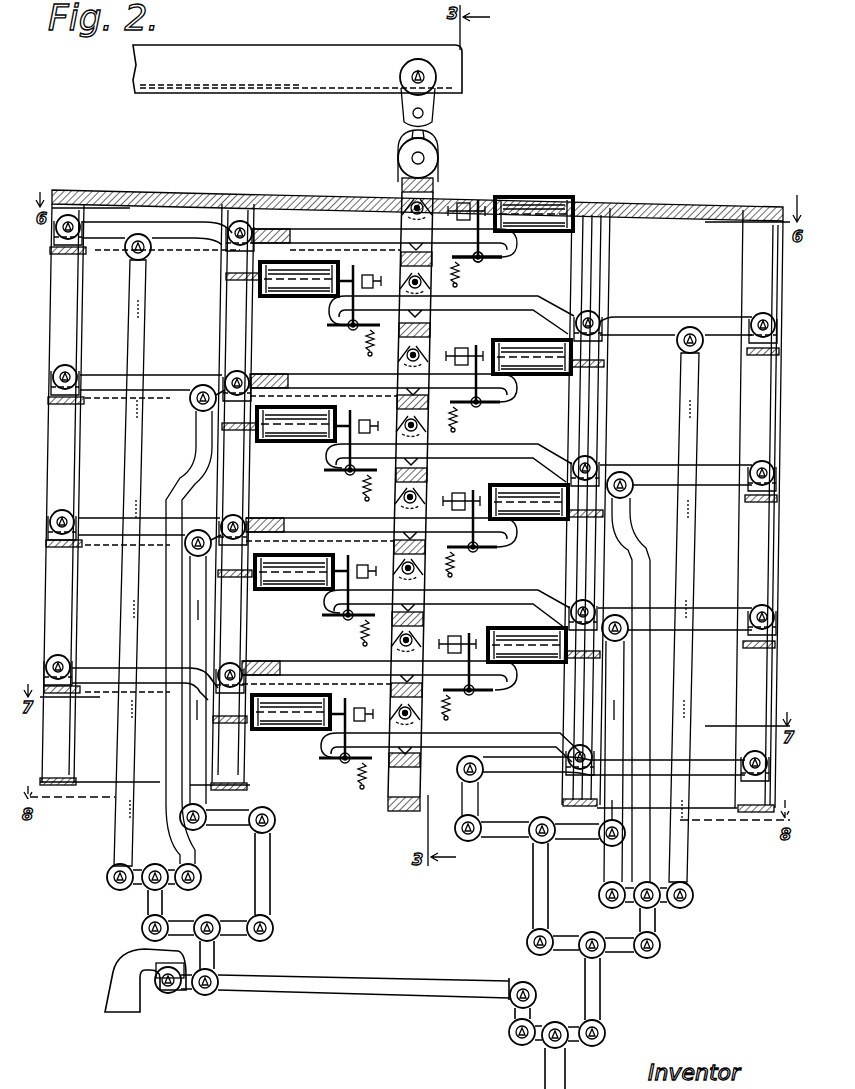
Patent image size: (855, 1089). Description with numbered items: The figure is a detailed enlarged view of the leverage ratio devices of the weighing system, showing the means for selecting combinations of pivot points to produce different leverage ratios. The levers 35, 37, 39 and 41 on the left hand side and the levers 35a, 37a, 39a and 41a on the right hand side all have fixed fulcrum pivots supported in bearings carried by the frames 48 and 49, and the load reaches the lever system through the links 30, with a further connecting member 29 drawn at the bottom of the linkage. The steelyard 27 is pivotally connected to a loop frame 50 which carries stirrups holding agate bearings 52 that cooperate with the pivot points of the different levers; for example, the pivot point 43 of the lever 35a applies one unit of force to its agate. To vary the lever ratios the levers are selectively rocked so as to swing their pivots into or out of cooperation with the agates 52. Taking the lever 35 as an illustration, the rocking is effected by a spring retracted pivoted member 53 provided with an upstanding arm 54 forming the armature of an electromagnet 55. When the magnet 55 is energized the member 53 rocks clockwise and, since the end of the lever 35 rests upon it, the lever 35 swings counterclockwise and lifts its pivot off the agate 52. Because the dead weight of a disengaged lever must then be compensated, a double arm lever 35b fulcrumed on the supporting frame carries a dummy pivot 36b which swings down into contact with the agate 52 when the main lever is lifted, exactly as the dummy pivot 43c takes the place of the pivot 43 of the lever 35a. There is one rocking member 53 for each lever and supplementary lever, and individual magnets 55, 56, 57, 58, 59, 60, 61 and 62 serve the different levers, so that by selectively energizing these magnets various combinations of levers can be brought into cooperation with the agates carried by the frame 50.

The steelyard 27 is at (432, 118).
The loop frame 50 is at (440, 181).
The upstanding arm 54 is at (482, 205).
The electromagnet 55 is at (540, 233).
The dummy pivot 36b is at (413, 250).
The double arm lever 35b is at (292, 234).
The lever 35 is at (172, 245).
The agate bearing 52 is at (400, 256).
The pivoted member 53 is at (487, 263).
The electromagnet 59 is at (288, 298).
The dummy pivot 43c is at (426, 322).
The pivot point 43 is at (397, 501).
The frame 48 is at (130, 329).
The lever 35a is at (661, 318).
The lever 37 is at (152, 393).
The electromagnet 56 is at (525, 378).
The electromagnet 60 is at (285, 443).
The frame 49 is at (746, 420).
The lever 37a is at (641, 465).
The lever 39 is at (150, 538).
The electromagnet 57 is at (525, 523).
The electromagnet 61 is at (292, 589).
The lever 39a is at (708, 608).
The lever 41 is at (140, 670).
The electromagnet 58 is at (518, 667).
The electromagnet 62 is at (268, 732).
The lever 41a is at (712, 752).
The link 30 is at (601, 1001).
The supply pipe 29 is at (566, 1078).